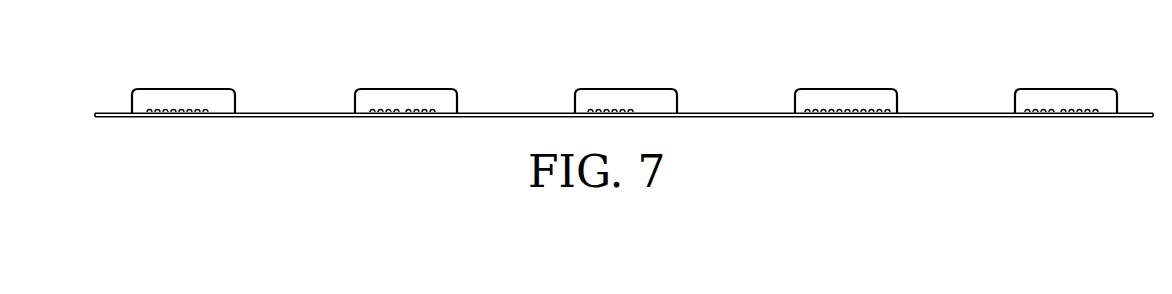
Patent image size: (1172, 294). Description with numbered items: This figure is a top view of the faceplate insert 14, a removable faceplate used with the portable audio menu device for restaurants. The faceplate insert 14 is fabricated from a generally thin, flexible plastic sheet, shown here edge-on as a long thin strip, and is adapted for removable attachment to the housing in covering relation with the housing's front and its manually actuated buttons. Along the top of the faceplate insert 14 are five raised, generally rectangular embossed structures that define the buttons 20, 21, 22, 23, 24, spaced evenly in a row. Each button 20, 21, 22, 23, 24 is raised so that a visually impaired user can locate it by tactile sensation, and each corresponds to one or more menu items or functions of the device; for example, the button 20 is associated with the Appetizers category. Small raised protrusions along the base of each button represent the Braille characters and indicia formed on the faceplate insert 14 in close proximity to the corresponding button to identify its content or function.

The faceplate insert 14 is at (322, 118).
The button 20 is at (232, 90).
The button 21 is at (437, 95).
The button 22 is at (642, 93).
The button 23 is at (842, 100).
The button 24 is at (1038, 90).